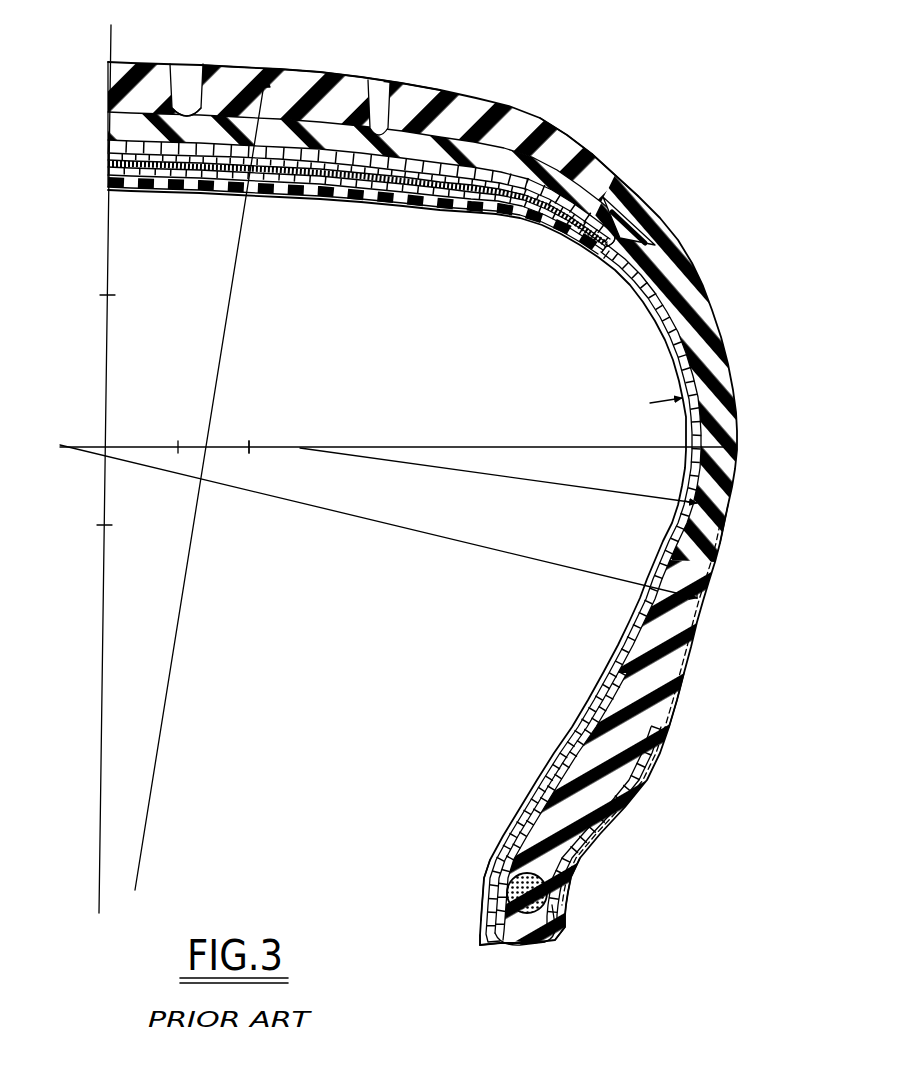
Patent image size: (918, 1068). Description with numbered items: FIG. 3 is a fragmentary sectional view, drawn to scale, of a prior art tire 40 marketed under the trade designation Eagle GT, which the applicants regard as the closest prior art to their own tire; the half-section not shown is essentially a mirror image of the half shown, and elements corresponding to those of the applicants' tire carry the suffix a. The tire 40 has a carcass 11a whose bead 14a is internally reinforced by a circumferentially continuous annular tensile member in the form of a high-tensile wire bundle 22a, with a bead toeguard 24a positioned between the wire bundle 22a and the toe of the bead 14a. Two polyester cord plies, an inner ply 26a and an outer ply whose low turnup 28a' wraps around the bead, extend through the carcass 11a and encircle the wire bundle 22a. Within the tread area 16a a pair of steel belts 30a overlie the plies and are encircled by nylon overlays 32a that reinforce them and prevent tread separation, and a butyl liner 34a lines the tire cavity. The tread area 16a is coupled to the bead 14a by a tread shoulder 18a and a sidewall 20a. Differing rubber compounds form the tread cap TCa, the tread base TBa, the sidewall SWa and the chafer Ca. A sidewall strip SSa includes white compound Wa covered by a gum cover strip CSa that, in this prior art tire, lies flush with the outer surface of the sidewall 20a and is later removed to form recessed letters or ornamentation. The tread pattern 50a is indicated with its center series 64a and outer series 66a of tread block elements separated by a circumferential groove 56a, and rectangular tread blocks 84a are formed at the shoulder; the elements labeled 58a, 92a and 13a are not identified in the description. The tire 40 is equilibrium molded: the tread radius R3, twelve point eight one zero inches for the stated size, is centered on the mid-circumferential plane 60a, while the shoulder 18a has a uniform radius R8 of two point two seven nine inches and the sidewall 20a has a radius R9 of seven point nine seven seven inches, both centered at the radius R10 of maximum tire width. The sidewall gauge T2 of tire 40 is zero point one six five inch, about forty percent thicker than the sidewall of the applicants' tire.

The tire 40 is at (552, 40).
The mid-circumferential plane 60a is at (112, 34).
The center series of tread block elements 64a is at (147, 65).
The groove 56a is at (193, 75).
The outer series of tread block elements 66a is at (253, 72).
The tread cap TCa is at (312, 80).
The tread pattern 50a is at (380, 63).
The tread groove 58a is at (385, 98).
The tread area 16a is at (489, 103).
The tread base TBa is at (492, 140).
The rectangular tread blocks 84a is at (572, 143).
The nylon overlays 32a is at (605, 190).
The sidewall insert 92a is at (630, 207).
The tread shoulder 18a is at (667, 262).
The turnup of outer ply 28a' is at (629, 614).
The inner ply 26a is at (657, 312).
The butyl liner 34a is at (423, 203).
The steel belts 30a is at (478, 201).
The carcass 11a is at (585, 256).
The sidewall gauge T2 is at (729, 390).
The sidewall compound SWa is at (745, 420).
The tire sidewall 20a is at (710, 515).
The white compound Wa is at (700, 584).
The gum cover strip CSa is at (700, 636).
The sidewall strip SSa is at (680, 696).
The chafer Ca is at (623, 798).
The tire bead 14a is at (570, 887).
The bead toeguard 24a is at (488, 920).
The bead toe 13a is at (480, 945).
The high-tensile wire bundle 22a is at (522, 935).
The tread radius R3 is at (222, 360).
The shoulder radius R8 is at (510, 473).
The sidewall radius R9 is at (430, 530).
The radius of maximum tire width R10 is at (223, 447).